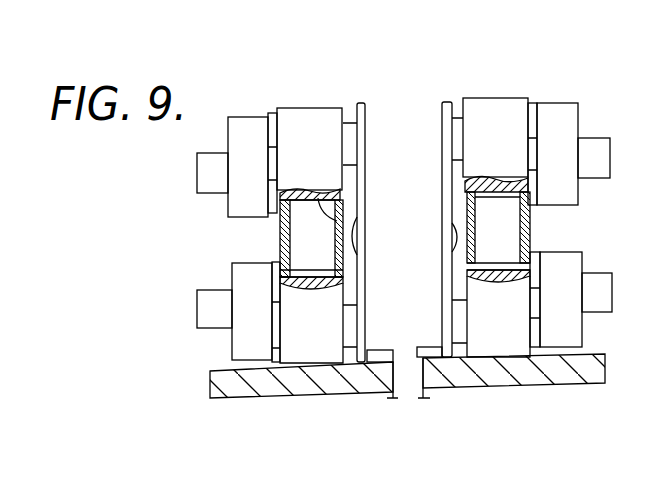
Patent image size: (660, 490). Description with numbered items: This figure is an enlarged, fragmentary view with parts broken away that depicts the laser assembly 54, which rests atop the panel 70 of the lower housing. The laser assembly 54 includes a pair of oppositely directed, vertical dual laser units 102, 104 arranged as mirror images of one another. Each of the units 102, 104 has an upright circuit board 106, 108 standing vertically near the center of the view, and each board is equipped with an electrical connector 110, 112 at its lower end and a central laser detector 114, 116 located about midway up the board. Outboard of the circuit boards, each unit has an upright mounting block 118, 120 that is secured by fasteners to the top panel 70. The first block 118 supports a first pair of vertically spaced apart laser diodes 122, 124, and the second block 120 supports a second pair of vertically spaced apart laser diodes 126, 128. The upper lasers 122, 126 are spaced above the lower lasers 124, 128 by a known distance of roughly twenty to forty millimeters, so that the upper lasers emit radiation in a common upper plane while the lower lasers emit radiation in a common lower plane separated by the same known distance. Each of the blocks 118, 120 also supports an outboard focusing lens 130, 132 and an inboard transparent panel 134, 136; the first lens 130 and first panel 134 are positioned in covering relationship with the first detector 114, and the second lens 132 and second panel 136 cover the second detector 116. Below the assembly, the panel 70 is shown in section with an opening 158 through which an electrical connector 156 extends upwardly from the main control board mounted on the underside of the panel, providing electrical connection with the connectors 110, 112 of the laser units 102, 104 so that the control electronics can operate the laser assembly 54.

The laser assembly 54 is at (557, 78).
The top panel 70 is at (213, 383).
The vertical dual laser unit 102 is at (299, 97).
The vertical dual laser unit 104 is at (501, 88).
The upright circuit board 106 is at (364, 119).
The upright circuit board 108 is at (443, 143).
The electrical connector 110 is at (382, 348).
The electrical connector 112 is at (429, 347).
The central laser detector 114 is at (355, 233).
The central laser detector 116 is at (456, 237).
The upright mounting block 118 is at (309, 354).
The upright mounting block 120 is at (515, 348).
The laser diode 122 is at (202, 176).
The laser diode 124 is at (240, 345).
The laser diode 126 is at (567, 128).
The laser diode 128 is at (572, 265).
The outboard focusing lens 130 is at (280, 237).
The outboard focusing lens 132 is at (531, 236).
The inboard transparent panel 134 is at (318, 196).
The inboard transparent panel 136 is at (496, 167).
The electrical connector 156 is at (403, 392).
The opening 158 is at (417, 393).